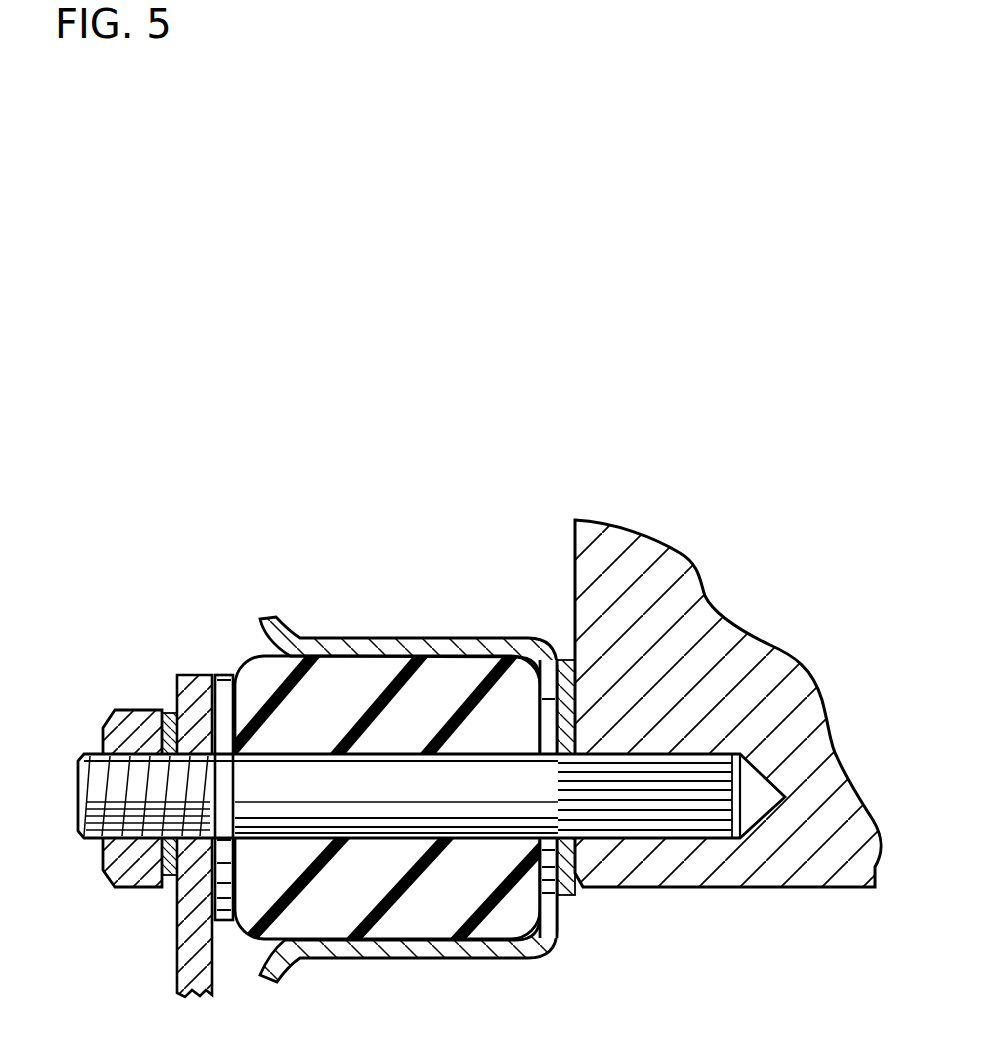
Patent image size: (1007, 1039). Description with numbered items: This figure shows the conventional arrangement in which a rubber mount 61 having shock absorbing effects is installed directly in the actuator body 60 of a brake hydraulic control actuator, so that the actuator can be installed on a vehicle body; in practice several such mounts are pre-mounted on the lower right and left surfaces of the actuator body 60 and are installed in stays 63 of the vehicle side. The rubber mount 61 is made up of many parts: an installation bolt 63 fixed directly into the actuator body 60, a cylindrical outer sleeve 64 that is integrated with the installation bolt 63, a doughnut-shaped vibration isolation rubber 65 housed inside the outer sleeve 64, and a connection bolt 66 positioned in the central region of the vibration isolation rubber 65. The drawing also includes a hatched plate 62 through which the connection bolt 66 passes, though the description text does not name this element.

The actuator body 60 is at (664, 541).
The rubber mount 61 is at (431, 761).
The mounting plate 62 is at (186, 970).
The installation bolt 63 is at (643, 818).
The outer sleeve 64 is at (453, 638).
The vibration isolation rubber 65 is at (363, 677).
The connection bolt 66 is at (97, 792).